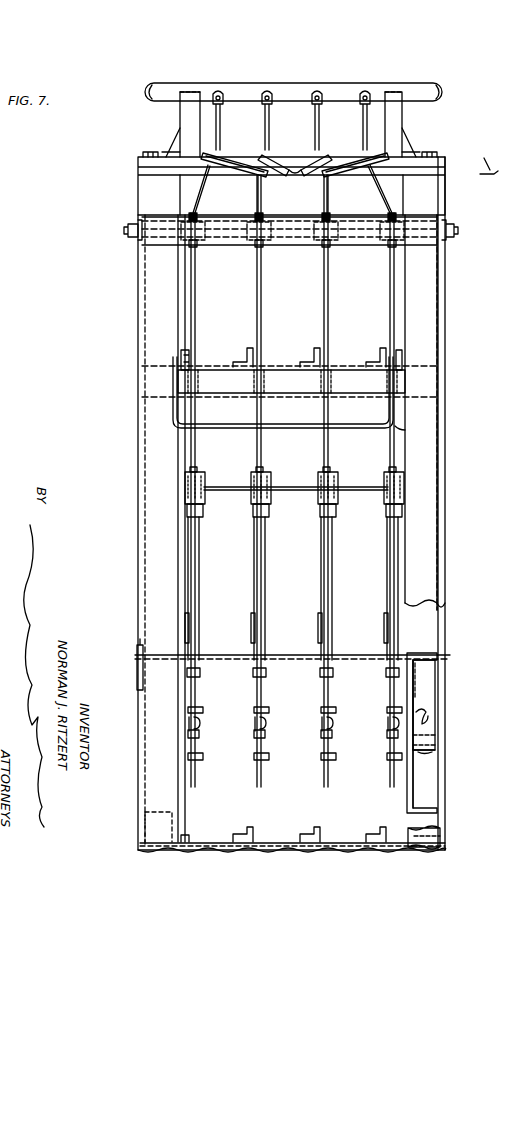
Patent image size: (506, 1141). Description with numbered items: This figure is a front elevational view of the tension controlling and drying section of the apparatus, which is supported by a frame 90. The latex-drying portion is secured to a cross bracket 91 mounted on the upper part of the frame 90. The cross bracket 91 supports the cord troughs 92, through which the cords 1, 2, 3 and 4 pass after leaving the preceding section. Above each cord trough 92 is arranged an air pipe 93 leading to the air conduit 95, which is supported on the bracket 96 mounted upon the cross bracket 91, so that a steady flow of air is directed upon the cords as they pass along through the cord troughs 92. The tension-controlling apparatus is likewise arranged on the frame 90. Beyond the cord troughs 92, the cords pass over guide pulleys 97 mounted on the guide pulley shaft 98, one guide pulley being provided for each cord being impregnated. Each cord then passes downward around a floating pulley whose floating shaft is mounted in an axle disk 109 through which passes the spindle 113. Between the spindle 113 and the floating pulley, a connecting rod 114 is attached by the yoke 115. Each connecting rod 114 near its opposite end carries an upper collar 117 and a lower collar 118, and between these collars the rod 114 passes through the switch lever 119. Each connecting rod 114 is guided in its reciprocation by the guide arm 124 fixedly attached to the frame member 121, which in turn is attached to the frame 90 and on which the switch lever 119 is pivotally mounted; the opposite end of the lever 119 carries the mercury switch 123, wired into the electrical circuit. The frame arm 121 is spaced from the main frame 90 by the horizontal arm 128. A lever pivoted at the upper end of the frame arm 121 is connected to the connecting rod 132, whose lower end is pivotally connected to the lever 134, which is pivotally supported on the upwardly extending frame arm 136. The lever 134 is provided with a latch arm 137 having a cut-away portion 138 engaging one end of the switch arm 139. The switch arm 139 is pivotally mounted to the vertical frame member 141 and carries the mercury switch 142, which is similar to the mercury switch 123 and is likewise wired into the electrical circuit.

The cord 1 is at (196, 297).
The cord 2 is at (261, 297).
The cord 3 is at (328, 296).
The cord 4 is at (389, 287).
The frame 90 is at (138, 263).
The cross bracket 91 is at (137, 191).
The cord trough 92 is at (267, 153).
The air pipe 93 is at (316, 126).
The air conduit 95 is at (418, 86).
The bracket 96 is at (179, 122).
The guide pulley 97 is at (197, 248).
The guide pulley shaft 98 is at (456, 233).
The axle disk 109 is at (249, 471).
The spindle 113 is at (287, 486).
The connecting rod 114 is at (257, 585).
The yoke 115 is at (234, 532).
The upper collar 117 is at (258, 708).
The lower collar 118 is at (254, 760).
The switch lever 119 is at (258, 735).
The frame member 121 is at (246, 604).
The mercury switch 123 is at (255, 723).
The guide arm 124 is at (252, 679).
The horizontal arm 128 is at (243, 350).
The connecting rod 132 is at (398, 438).
The lever 134 is at (291, 655).
The upwardly extending frame arm 136 is at (445, 671).
The latch arm 137 is at (430, 751).
The cut-away portion 138 is at (298, 425).
The switch arm 139 is at (436, 740).
The vertical frame member 141 is at (414, 791).
The mercury switch 142 is at (427, 717).